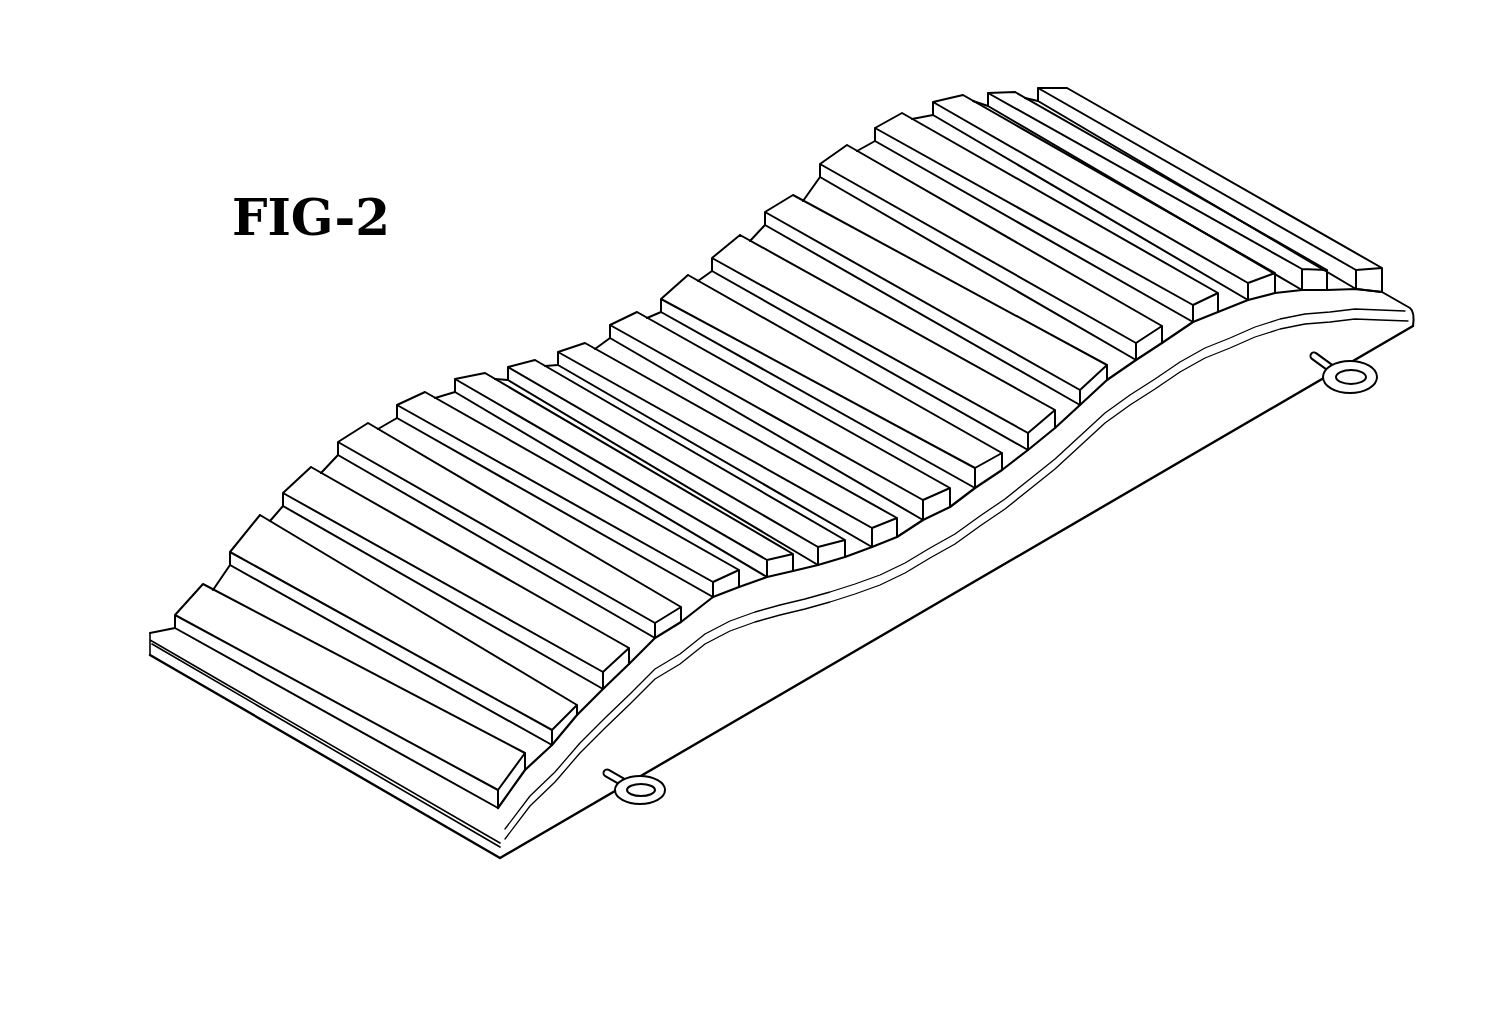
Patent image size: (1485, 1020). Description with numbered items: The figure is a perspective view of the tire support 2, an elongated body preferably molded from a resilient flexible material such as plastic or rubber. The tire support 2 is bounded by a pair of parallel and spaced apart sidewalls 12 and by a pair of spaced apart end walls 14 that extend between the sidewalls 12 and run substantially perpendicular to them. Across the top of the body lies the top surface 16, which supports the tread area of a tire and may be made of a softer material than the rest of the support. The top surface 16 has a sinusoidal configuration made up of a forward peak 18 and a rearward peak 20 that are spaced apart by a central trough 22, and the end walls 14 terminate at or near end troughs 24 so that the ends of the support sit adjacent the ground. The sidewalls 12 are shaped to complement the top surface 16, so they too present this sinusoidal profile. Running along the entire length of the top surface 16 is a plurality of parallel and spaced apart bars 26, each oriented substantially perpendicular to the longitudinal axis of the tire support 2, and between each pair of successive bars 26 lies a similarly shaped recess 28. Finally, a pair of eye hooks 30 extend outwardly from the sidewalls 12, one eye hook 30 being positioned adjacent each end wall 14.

The tire support 2 is at (1197, 143).
The sidewall 12 is at (1140, 463).
The end wall 14 is at (1392, 295).
The top surface 16 is at (1183, 212).
The forward peak 18 is at (380, 415).
The rearward peak 20 is at (866, 145).
The central trough 22 is at (601, 342).
The end trough 24 is at (1347, 250).
The bar 26 is at (787, 200).
The recess 28 is at (770, 240).
The eye hook 30 is at (1357, 395).